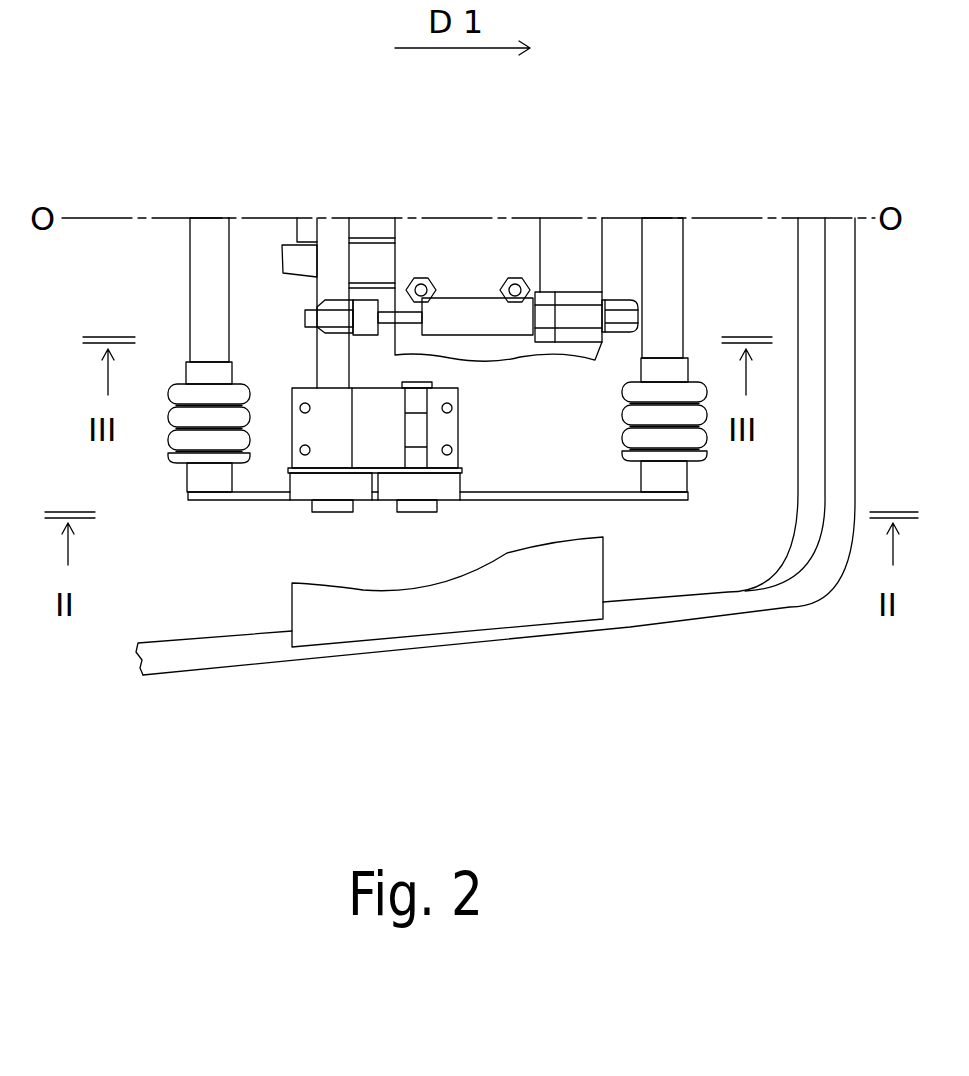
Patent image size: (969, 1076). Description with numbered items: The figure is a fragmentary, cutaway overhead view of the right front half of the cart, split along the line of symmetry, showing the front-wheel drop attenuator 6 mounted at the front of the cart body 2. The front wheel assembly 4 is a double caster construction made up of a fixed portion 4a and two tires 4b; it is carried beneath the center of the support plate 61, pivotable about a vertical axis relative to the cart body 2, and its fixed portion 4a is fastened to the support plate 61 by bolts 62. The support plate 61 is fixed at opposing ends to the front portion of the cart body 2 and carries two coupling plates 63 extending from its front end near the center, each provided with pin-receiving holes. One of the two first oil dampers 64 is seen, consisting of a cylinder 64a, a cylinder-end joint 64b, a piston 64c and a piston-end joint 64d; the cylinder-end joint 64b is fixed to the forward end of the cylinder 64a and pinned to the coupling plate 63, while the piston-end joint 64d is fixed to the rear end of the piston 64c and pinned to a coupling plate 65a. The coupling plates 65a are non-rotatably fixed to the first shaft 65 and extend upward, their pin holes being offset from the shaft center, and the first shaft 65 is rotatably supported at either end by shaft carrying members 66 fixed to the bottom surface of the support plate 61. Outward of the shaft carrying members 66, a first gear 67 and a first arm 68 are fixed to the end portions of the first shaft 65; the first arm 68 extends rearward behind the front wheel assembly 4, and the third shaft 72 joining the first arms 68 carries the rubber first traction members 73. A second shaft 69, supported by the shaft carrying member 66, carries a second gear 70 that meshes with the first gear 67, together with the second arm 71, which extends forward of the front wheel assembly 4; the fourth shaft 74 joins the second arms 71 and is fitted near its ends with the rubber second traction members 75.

The cart body 2 is at (798, 619).
The front wheel assembly 4 is at (218, 187).
The fixed portion 4a is at (280, 260).
The tires 4b is at (303, 240).
The front-wheel drop attenuator 6 is at (781, 301).
The support plate 61 is at (527, 227).
The bolts 62 is at (423, 285).
The coupling plates 63 is at (617, 310).
The first oil damper 64 is at (517, 345).
The cylinder 64a is at (472, 308).
The cylinder-end joint 64b is at (633, 300).
The piston 64c is at (385, 308).
The piston-end joint 64d is at (337, 302).
The first shaft 65 is at (328, 352).
The coupling plates 65a is at (305, 315).
The shaft carrying members 66 is at (452, 428).
The first gear 67 is at (308, 482).
The first arm 68 is at (220, 500).
The second shaft 69 is at (418, 458).
The second gear 70 is at (439, 483).
The second arm 71 is at (625, 497).
The third shaft 72 is at (207, 246).
The first traction members 73 is at (172, 382).
The fourth shaft 74 is at (675, 270).
The second traction members 75 is at (693, 457).